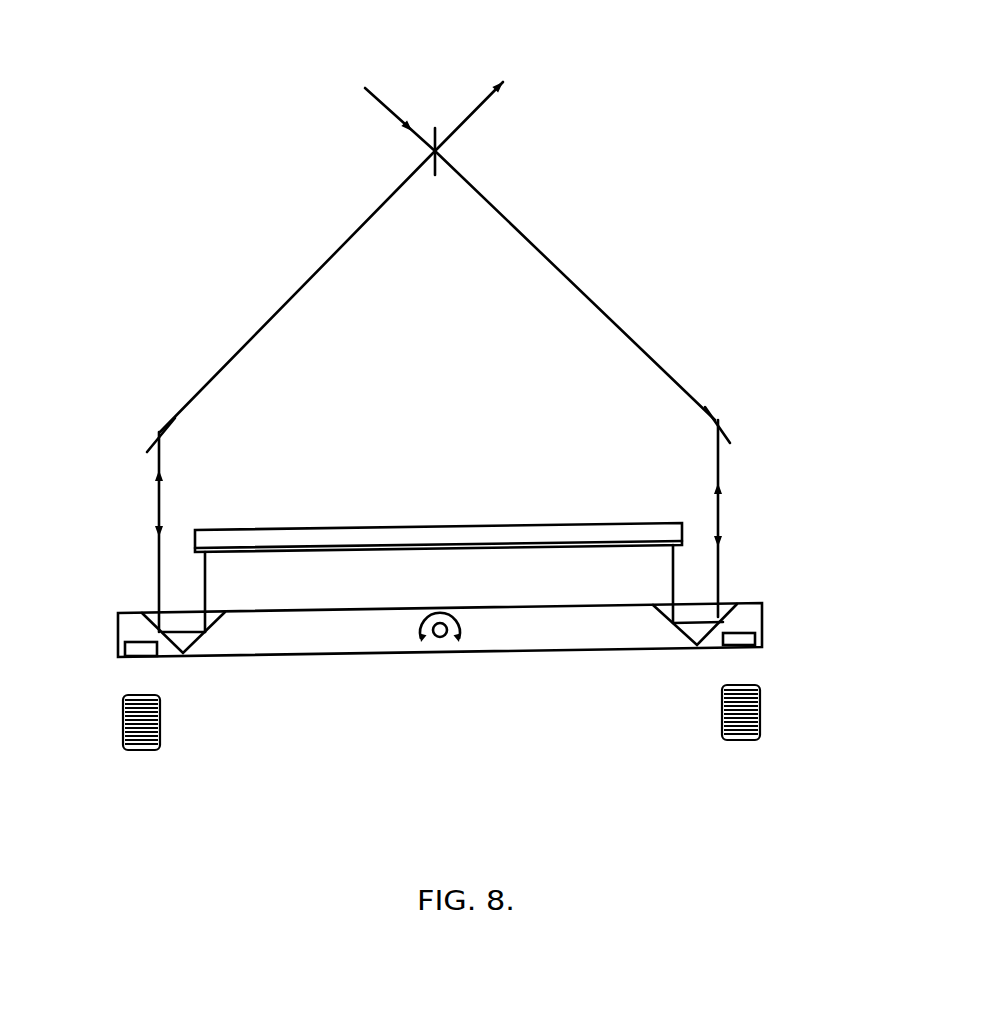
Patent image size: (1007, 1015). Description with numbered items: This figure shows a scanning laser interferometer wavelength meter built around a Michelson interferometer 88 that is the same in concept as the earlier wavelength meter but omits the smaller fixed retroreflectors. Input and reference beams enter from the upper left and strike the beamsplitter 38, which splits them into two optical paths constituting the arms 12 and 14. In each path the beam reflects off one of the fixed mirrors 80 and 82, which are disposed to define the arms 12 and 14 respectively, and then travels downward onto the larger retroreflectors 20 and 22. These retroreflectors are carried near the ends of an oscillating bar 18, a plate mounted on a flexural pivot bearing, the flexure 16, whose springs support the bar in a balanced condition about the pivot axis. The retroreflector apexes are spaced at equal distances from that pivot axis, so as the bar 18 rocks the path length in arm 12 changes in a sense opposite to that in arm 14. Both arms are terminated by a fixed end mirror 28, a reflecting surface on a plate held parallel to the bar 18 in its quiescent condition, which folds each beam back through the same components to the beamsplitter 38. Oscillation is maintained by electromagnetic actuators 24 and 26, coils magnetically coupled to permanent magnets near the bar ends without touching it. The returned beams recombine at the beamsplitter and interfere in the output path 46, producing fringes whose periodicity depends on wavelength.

The arm 12 is at (568, 278).
The arm 14 is at (338, 247).
The flexural pivot bearing 16 is at (447, 633).
The oscillating bar 18 is at (307, 607).
The retroreflector 20 is at (763, 620).
The retroreflector 22 is at (150, 624).
The electromagnetic actuator 24 is at (758, 738).
The electromagnetic actuator 26 is at (128, 750).
The fixed end mirror 28 is at (297, 528).
The beamsplitter 38 is at (437, 133).
The output path 46 is at (478, 107).
The fixed mirror 80 is at (708, 408).
The fixed mirror 82 is at (168, 420).
The Michelson interferometer 88 is at (432, 320).